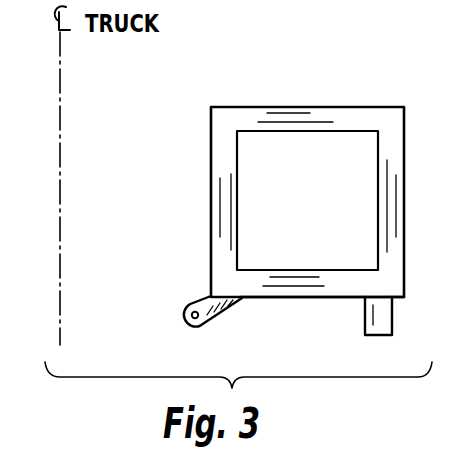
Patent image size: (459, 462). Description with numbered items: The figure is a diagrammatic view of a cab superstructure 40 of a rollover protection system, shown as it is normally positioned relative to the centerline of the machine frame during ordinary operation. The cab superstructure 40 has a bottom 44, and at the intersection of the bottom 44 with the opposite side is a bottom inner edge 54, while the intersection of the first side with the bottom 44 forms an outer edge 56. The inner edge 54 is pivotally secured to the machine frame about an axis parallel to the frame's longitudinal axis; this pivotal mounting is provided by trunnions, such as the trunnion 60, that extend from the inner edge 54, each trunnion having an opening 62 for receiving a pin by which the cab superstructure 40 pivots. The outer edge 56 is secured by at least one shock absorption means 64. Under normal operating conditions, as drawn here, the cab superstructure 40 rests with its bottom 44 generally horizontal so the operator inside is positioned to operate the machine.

The cab superstructure 40 is at (216, 92).
The bottom 44 is at (321, 299).
The bottom inner edge 54 is at (200, 300).
The outer edge 56 is at (407, 297).
The second trunnion 60 is at (225, 313).
The opening 62 is at (191, 316).
The shock absorption means 64 is at (380, 326).